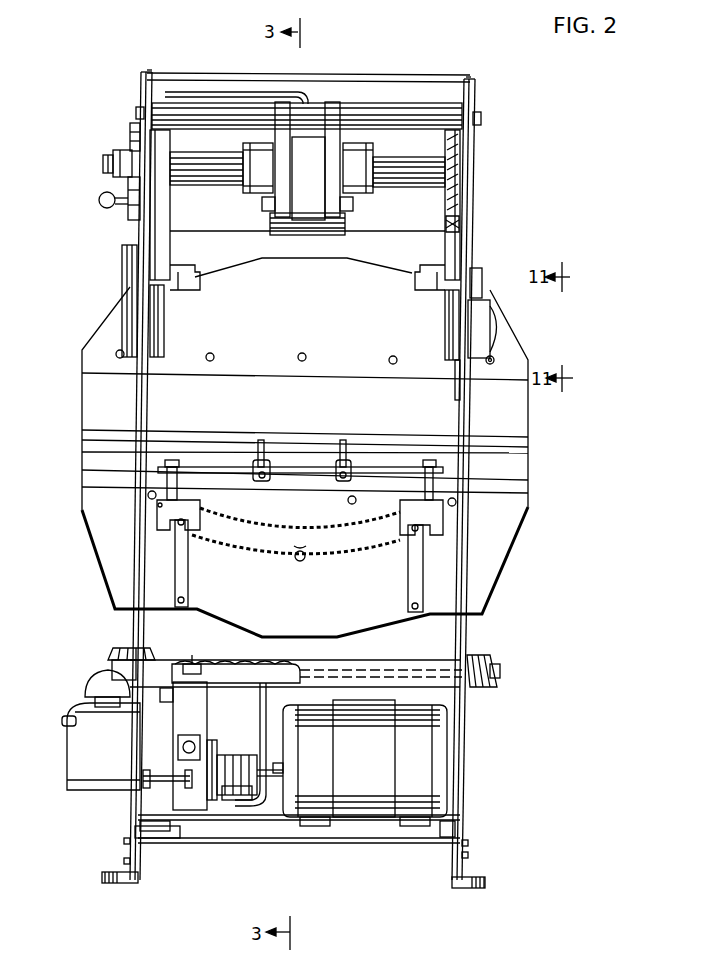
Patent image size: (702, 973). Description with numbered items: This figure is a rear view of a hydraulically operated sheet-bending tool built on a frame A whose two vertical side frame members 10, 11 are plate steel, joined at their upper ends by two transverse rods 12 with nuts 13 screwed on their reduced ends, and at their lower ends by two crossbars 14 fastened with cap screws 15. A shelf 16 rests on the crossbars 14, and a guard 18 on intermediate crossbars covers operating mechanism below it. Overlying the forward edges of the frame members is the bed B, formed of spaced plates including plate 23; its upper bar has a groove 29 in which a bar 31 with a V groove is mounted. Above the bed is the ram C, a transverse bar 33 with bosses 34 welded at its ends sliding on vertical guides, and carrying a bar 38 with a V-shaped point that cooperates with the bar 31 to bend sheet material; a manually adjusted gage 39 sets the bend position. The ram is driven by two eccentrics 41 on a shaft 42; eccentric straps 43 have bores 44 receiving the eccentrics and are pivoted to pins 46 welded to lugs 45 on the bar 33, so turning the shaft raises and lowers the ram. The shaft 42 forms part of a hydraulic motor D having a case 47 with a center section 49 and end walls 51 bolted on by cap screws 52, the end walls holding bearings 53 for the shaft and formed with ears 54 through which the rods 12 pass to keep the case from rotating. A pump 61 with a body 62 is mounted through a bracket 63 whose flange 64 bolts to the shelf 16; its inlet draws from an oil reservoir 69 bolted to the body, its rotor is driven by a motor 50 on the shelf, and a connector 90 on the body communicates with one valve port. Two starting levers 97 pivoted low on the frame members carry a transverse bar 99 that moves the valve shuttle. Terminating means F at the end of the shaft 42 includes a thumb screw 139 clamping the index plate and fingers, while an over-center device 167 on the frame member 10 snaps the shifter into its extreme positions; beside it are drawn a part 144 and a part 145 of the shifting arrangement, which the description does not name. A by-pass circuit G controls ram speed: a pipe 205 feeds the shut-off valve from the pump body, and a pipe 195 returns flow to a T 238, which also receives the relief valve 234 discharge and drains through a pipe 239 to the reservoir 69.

The vertical side frame member 10 is at (143, 412).
The vertical side frame member 11 is at (463, 415).
The transverse rod 12 is at (410, 120).
The nut 13 is at (136, 108).
The crossbar 14 is at (150, 852).
The cap screw 15 is at (126, 842).
The shelf 16 is at (317, 844).
The guard 18 is at (407, 668).
The plate 23 is at (285, 345).
The groove 29 is at (518, 488).
The bar with V groove 31 is at (513, 467).
The transverse bar 33 is at (110, 335).
The boss 34 is at (160, 346).
The bar with V-shaped point 38 is at (97, 389).
The gage 39 is at (260, 440).
The eccentric 41 is at (450, 197).
The shaft 42 is at (418, 172).
The eccentric strap 43 is at (158, 241).
The bore 44 is at (458, 225).
The lug 45 is at (177, 280).
The pin 46 is at (200, 279).
The case 47 is at (311, 140).
The center section 49 is at (310, 222).
The motor 50 is at (423, 769).
The end wall 51 is at (272, 232).
The cap screw 52 is at (266, 203).
The bearing 53 is at (256, 172).
The ear 54 is at (282, 112).
The pump 61 is at (187, 700).
The body 62 is at (177, 762).
The bracket 63 is at (215, 743).
The flange 64 is at (172, 832).
The oil reservoir 69 is at (90, 770).
The connector 90 is at (192, 663).
The starting lever 97 is at (145, 823).
The transverse bar 99 is at (359, 821).
The thumb screw 139 is at (104, 164).
The pin 144 is at (119, 207).
The ball 145 is at (99, 200).
The over-center device 167 is at (132, 138).
The pipe 195 is at (470, 525).
The pipe 205 is at (242, 668).
The relief valve 234 is at (237, 797).
The T 238 is at (243, 797).
The pipe 239 is at (227, 803).
The frame A is at (472, 80).
The bed B is at (83, 505).
The ram C is at (92, 360).
The hydraulic motor D is at (294, 225).
The terminating means F is at (116, 152).
The by-pass circuit G is at (478, 326).